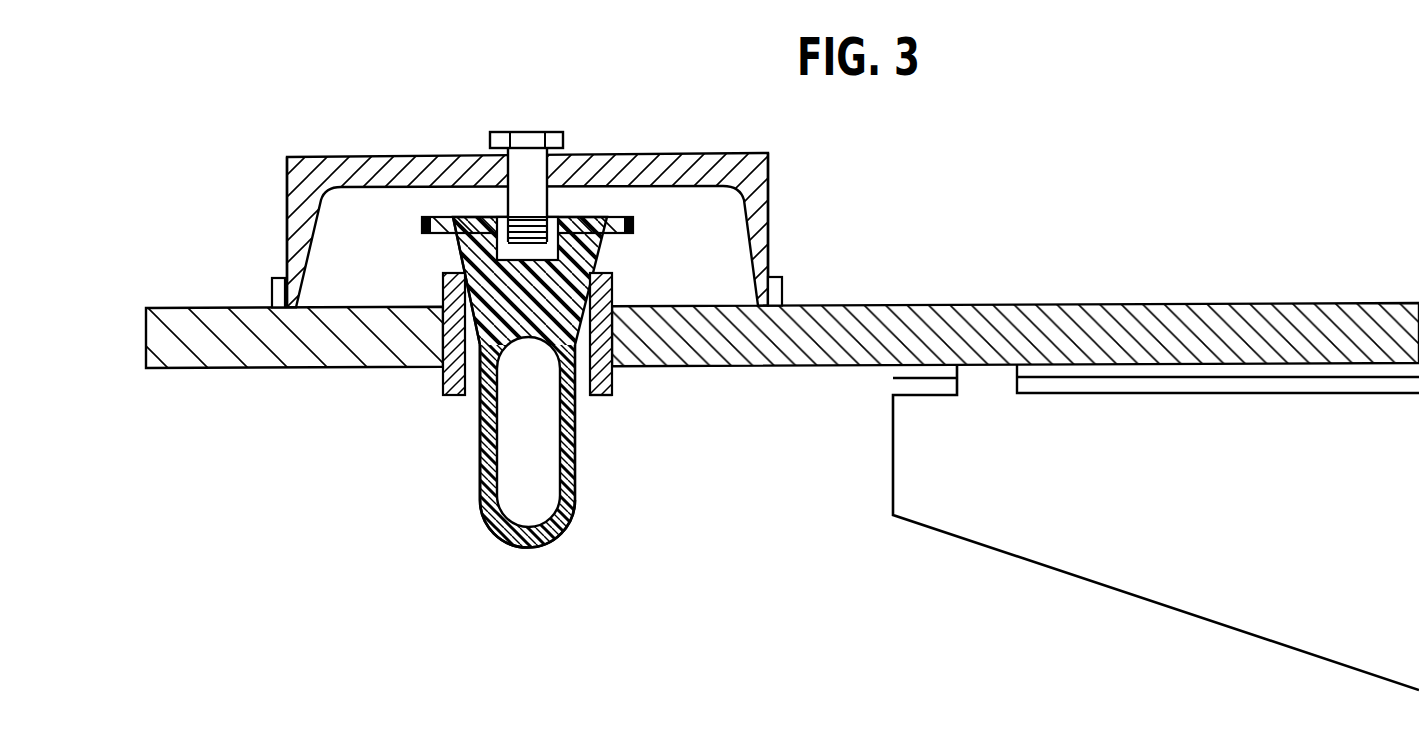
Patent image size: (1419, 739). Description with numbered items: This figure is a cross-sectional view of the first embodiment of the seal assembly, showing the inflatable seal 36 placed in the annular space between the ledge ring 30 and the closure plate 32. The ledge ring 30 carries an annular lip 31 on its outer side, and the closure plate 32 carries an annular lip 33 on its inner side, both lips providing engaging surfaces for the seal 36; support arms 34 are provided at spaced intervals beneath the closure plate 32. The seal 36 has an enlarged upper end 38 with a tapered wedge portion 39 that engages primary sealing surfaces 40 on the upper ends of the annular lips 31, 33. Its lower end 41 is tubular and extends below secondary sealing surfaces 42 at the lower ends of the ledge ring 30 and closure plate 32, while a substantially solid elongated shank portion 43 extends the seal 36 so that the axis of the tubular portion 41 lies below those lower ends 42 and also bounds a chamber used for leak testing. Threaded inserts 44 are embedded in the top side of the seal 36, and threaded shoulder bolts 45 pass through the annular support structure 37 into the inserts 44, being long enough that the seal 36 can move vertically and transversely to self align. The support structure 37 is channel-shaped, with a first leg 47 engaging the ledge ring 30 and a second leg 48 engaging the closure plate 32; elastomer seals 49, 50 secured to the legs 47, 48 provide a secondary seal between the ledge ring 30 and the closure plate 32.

The ledge ring 30 is at (183, 372).
The annular lip 31 is at (443, 278).
The closure plate 32 is at (1176, 298).
The annular lip 33 is at (614, 280).
The support arm 34 is at (1155, 575).
The inflatable seal 36 is at (470, 492).
The annular support structure 37 is at (372, 148).
The enlarged upper end 38 is at (630, 218).
The tapered wedge portion 39 is at (456, 254).
The primary sealing surface 40 is at (605, 265).
The lower end 41 is at (572, 518).
The secondary sealing surface 42 is at (599, 403).
The elongated shank portion 43 is at (477, 345).
The threaded insert 44 is at (553, 233).
The threaded shoulder bolt 45 is at (534, 124).
The first leg 47 is at (287, 190).
The second leg 48 is at (768, 222).
The elastomer seal 49 is at (273, 290).
The elastomer seal 50 is at (786, 278).